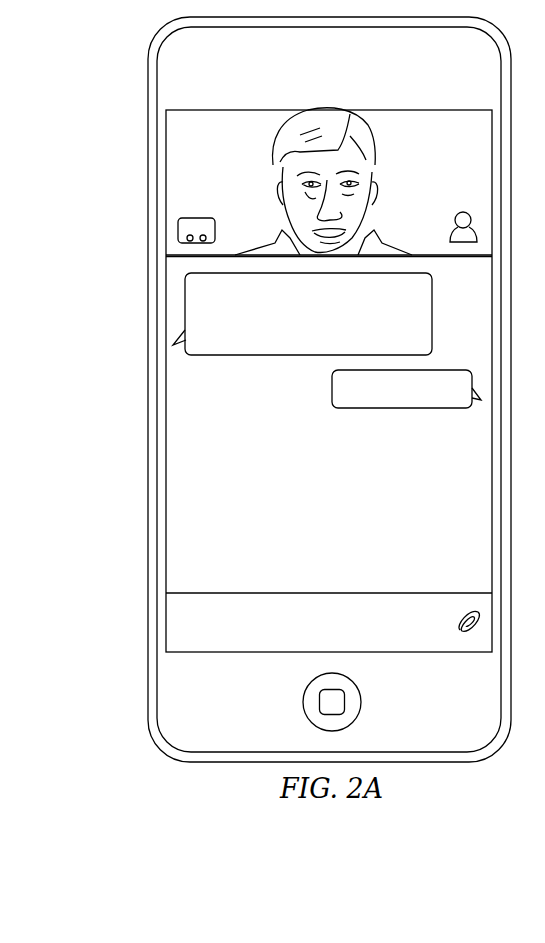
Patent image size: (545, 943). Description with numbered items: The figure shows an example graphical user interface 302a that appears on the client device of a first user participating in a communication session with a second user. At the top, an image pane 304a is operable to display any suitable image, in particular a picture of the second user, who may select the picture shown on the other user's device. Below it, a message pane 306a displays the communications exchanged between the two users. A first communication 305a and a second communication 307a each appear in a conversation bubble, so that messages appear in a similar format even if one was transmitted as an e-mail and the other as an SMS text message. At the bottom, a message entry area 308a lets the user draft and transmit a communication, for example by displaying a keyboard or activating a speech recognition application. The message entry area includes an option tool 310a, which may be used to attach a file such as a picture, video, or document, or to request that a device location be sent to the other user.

The graphical user interface 302a is at (142, 88).
The image pane 304a is at (238, 118).
The communication 305a is at (240, 358).
The message pane 306a is at (180, 455).
The communication 307a is at (402, 412).
The message entry area 308a is at (175, 622).
The option tool 310a is at (455, 628).